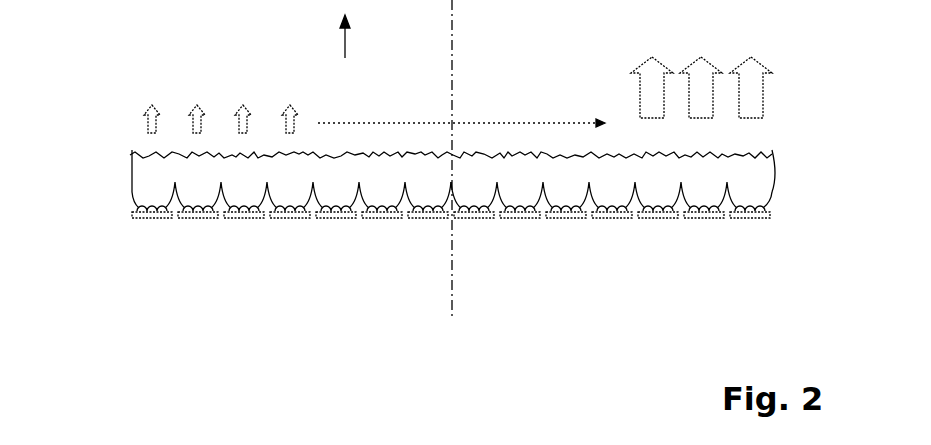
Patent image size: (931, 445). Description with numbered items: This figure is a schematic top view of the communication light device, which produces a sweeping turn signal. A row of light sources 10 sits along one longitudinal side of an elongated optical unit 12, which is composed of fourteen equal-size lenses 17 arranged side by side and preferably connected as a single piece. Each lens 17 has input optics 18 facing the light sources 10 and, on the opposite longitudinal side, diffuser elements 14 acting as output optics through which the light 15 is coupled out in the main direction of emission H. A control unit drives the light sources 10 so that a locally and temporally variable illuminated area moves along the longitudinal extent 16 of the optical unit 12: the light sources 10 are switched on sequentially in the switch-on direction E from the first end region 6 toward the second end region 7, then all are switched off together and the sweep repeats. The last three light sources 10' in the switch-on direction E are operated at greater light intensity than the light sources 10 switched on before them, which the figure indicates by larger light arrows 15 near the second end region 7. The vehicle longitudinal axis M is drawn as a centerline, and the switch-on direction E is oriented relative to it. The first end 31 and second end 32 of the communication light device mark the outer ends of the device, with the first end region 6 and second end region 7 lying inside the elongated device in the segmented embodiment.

The first end region 6 is at (116, 230).
The second end region 7 is at (797, 239).
The light sources 10 is at (290, 249).
The light sources switched on last 10' is at (612, 258).
The elongated optical unit 12 is at (396, 158).
The diffuser elements 14 is at (604, 157).
The light 15 is at (145, 124).
The longitudinal extent 16 is at (528, 258).
The lenses 17 is at (742, 177).
The input optics 18 is at (197, 200).
The first end of the communication light device 31 is at (92, 180).
The second end of the communication light device 32 is at (822, 197).
The main direction of emission H is at (345, 42).
The vehicle longitudinal axis M is at (452, 42).
The switch-on direction E is at (512, 121).